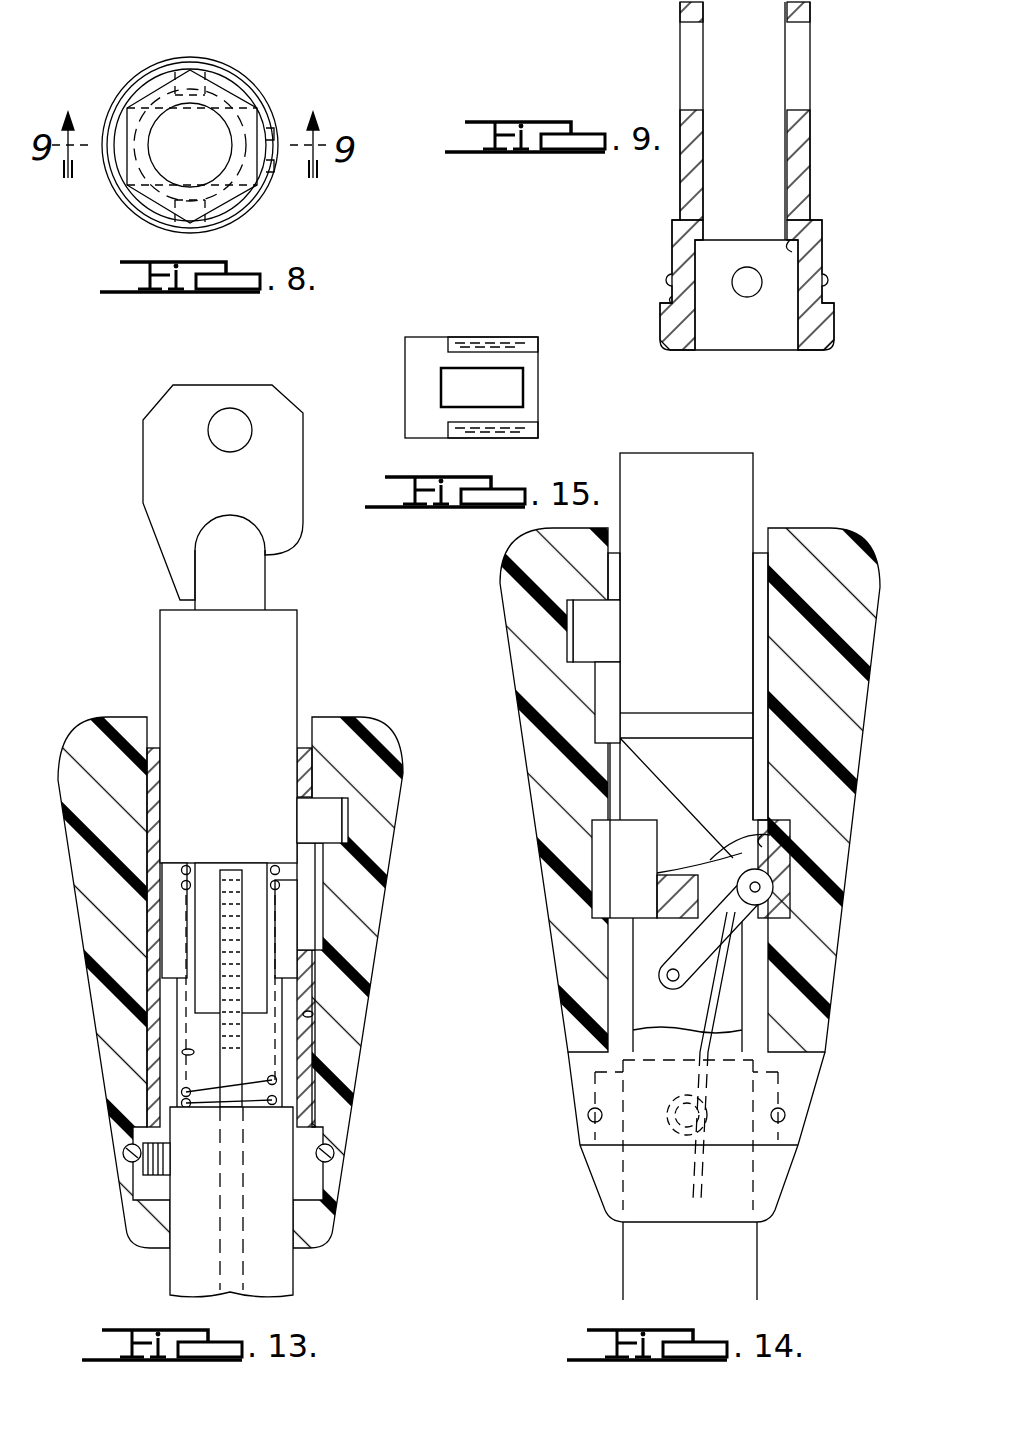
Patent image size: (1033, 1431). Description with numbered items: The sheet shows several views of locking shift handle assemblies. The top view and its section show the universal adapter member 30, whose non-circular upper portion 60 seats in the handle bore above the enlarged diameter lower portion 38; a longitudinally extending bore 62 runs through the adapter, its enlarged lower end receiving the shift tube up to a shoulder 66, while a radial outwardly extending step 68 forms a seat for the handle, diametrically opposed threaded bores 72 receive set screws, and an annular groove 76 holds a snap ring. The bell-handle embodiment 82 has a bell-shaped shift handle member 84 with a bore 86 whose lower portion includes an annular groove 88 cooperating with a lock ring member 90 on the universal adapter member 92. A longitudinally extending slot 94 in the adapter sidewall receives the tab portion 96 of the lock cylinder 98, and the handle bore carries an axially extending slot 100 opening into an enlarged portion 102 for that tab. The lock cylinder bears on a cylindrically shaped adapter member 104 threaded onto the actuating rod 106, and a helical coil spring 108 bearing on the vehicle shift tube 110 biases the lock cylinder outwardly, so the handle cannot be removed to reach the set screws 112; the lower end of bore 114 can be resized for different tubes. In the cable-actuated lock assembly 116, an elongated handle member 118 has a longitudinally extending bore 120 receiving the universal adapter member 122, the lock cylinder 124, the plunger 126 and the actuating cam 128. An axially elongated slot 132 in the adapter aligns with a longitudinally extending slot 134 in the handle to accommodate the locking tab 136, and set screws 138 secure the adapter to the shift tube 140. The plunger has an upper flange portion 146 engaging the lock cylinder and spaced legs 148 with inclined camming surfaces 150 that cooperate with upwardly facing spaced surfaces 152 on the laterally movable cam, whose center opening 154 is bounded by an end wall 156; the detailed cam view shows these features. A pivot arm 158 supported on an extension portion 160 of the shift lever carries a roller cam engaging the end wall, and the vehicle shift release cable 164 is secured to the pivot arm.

In FIG. 8, the universal adapter member 30 is at (300, 93).
In FIG. 9, the universal adapter member 30 is at (854, 125).
In FIG. 8, the enlarged diameter lower portion 38 is at (205, 115).
In FIG. 8, the upper portion 60 is at (243, 210).
In FIG. 9, the upper portion 60 is at (812, 160).
In FIG. 9, the longitudinally extending bore 62 is at (690, 52).
In FIG. 9, the shoulder 66 is at (800, 244).
In FIG. 9, the radial outwardly extending step 68 is at (668, 300).
In FIG. 8, the threaded bores 72 is at (172, 70).
In FIG. 9, the threaded bores 72 is at (760, 292).
In FIG. 9, the annular groove 76 is at (824, 282).
In FIG. 13, the bell-shaped shift handle assembly embodiment 82 is at (342, 696).
In FIG. 13, the bell-shaped shift handle member 84 is at (350, 935).
In FIG. 13, the bore 86 is at (313, 1015).
In FIG. 13, the annular groove 88 is at (330, 1148).
In FIG. 13, the lock ring member 90 is at (335, 1157).
In FIG. 13, the universal adapter member 92 is at (305, 990).
In FIG. 13, the longitudinally extending slot 94 is at (305, 905).
In FIG. 13, the tab portion 96 is at (315, 813).
In FIG. 13, the lock cylinder 98 is at (212, 729).
In FIG. 13, the axially extending slot 100 is at (320, 868).
In FIG. 13, the enlarged portion 102 is at (349, 825).
In FIG. 13, the cylindrically shaped adapter member 104 is at (200, 945).
In FIG. 13, the actuating rod 106 is at (242, 1055).
In FIG. 13, the helical coil spring 108 is at (185, 887).
In FIG. 13, the vehicle shift tube 110 is at (278, 1268).
In FIG. 13, the set screws 112 is at (130, 1183).
In FIG. 13, the bore 114 is at (182, 1052).
In FIG. 14, the lock assembly 116 is at (839, 524).
In FIG. 14, the elongated handle member 118 is at (850, 636).
In FIG. 14, the longitudinally extending bore 120 is at (765, 735).
In FIG. 14, the universal adapter member 122 is at (775, 1177).
In FIG. 14, the lock cylinder 124 is at (740, 472).
In FIG. 14, the plunger 126 is at (770, 762).
In FIG. 15, the actuating cam 128 is at (560, 408).
In FIG. 14, the actuating cam 128 is at (800, 880).
In FIG. 14, the axially elongated slot 132 is at (615, 700).
In FIG. 14, the longitudinally extending slot 134 is at (600, 676).
In FIG. 14, the locking tab 136 is at (602, 631).
In FIG. 14, the set screws 138 is at (675, 1128).
In FIG. 14, the shift tube 140 is at (772, 1242).
In FIG. 14, the upper flange portion 146 is at (745, 723).
In FIG. 14, the spaced legs 148 is at (735, 781).
In FIG. 14, the inclined camming surface 150 is at (650, 780).
In FIG. 15, the upwardly facing spaced surfaces 152 is at (500, 345).
In FIG. 14, the upwardly facing spaced surfaces 152 is at (755, 822).
In FIG. 15, the center opening 154 is at (462, 385).
In FIG. 14, the center opening 154 is at (680, 893).
In FIG. 15, the end wall 156 is at (518, 383).
In FIG. 14, the end wall 156 is at (768, 855).
In FIG. 14, the pivot arm 158 is at (760, 925).
In FIG. 14, the extension portion 160 is at (790, 895).
In FIG. 14, the vehicle shift release cable 164 is at (745, 1000).